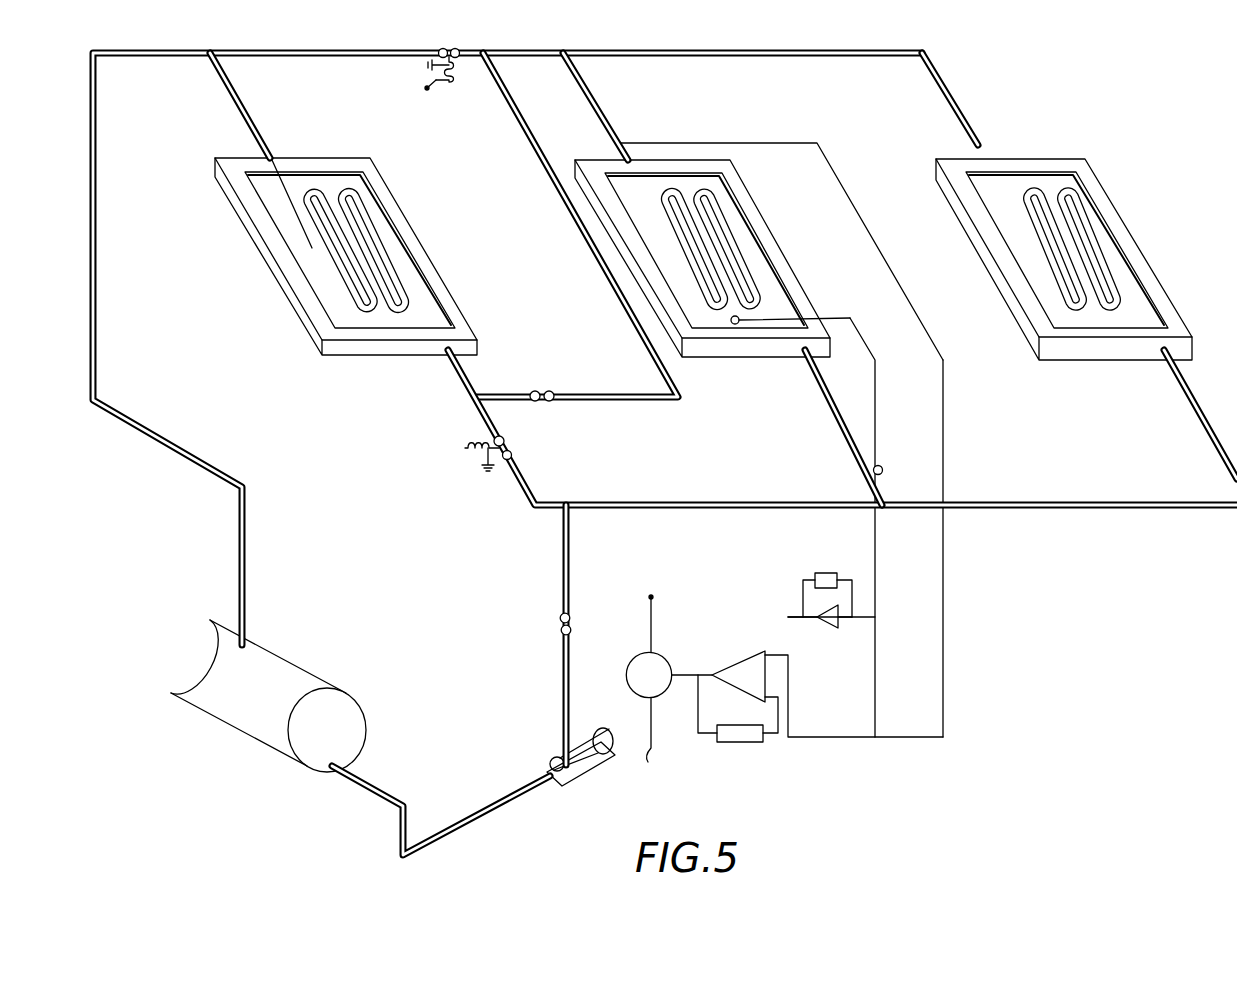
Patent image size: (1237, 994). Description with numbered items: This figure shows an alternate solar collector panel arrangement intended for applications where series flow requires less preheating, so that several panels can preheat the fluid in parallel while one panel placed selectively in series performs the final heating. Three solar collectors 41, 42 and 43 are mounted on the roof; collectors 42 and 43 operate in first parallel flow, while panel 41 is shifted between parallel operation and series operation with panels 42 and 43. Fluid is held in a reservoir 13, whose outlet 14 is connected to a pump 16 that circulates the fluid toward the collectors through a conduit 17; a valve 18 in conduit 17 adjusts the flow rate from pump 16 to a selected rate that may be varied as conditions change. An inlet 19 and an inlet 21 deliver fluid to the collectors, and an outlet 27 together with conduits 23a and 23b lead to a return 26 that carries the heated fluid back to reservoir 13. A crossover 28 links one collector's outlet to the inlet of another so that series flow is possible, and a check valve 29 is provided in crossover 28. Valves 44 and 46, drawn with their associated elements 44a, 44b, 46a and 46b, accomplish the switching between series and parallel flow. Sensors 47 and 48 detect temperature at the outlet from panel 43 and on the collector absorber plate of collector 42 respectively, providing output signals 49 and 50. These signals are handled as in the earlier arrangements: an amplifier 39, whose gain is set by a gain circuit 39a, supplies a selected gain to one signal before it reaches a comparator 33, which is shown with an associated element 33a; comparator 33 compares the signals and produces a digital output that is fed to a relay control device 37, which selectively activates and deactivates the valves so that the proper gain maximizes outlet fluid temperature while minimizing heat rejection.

The reservoir 13 is at (268, 696).
The outlet 14 is at (371, 793).
The pump 16 is at (612, 752).
The conduit 17 is at (565, 688).
The valve 18 is at (562, 619).
The inlet 19 is at (830, 500).
The inlet 21 is at (385, 313).
The branch supply conduit 23a is at (581, 78).
The branch supply conduit 23b is at (1026, 95).
The return 26 is at (336, 50).
The outlet 27 is at (265, 143).
The crossover 28 is at (522, 231).
The check valve 29 is at (537, 391).
The comparator 33 is at (760, 655).
The feedback resistor 33a is at (740, 743).
The relay control device 37 is at (669, 674).
The amplifier 39 is at (838, 626).
The gain circuit 39a is at (813, 570).
The solar collector 41 is at (346, 250).
The solar collector 42 is at (712, 178).
The solar collector 43 is at (1070, 182).
The valve 44 is at (548, 440).
The solenoid coil 44a is at (465, 437).
The control lead 44b is at (468, 452).
The valve 46 is at (458, 40).
The solenoid coil 46a is at (457, 72).
The control lead 46b is at (425, 88).
The sensor 47 is at (622, 143).
The sensor 48 is at (738, 318).
The output signal 49 is at (875, 435).
The output signal 50 is at (945, 423).